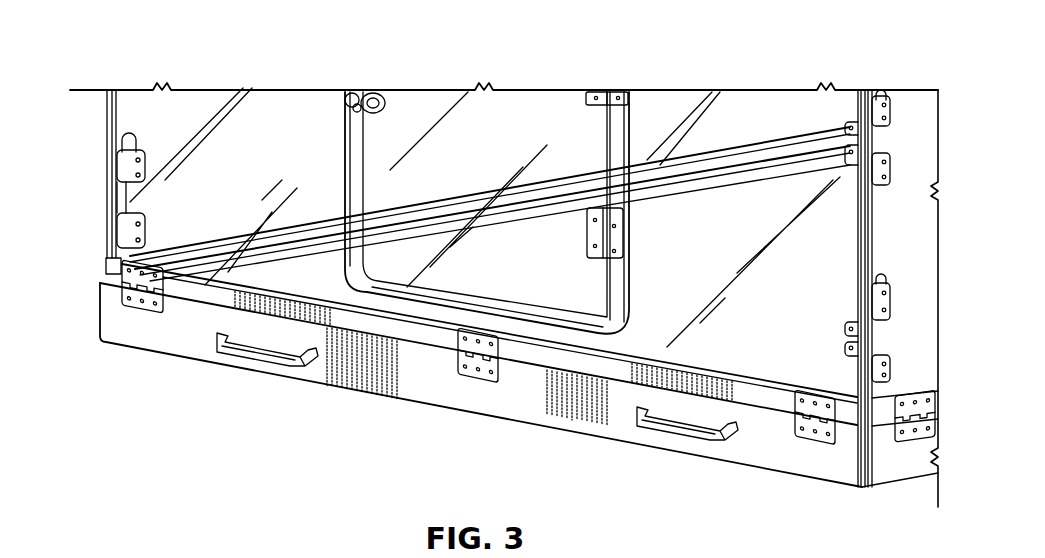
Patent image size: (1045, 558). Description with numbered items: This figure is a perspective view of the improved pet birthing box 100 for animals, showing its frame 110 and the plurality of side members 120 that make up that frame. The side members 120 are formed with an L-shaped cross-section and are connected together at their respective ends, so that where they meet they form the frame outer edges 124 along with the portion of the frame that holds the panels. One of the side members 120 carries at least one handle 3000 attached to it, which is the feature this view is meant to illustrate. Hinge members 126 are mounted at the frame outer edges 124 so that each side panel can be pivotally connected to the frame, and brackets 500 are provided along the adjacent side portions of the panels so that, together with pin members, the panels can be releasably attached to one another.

The improved pet birthing box 100 is at (714, 53).
The frame 110 is at (108, 268).
The side members 120 is at (375, 380).
The frame outer edges 124 is at (187, 302).
The hinge members 126 is at (485, 376).
The brackets 500 is at (848, 133).
The handle 3000 is at (665, 438).